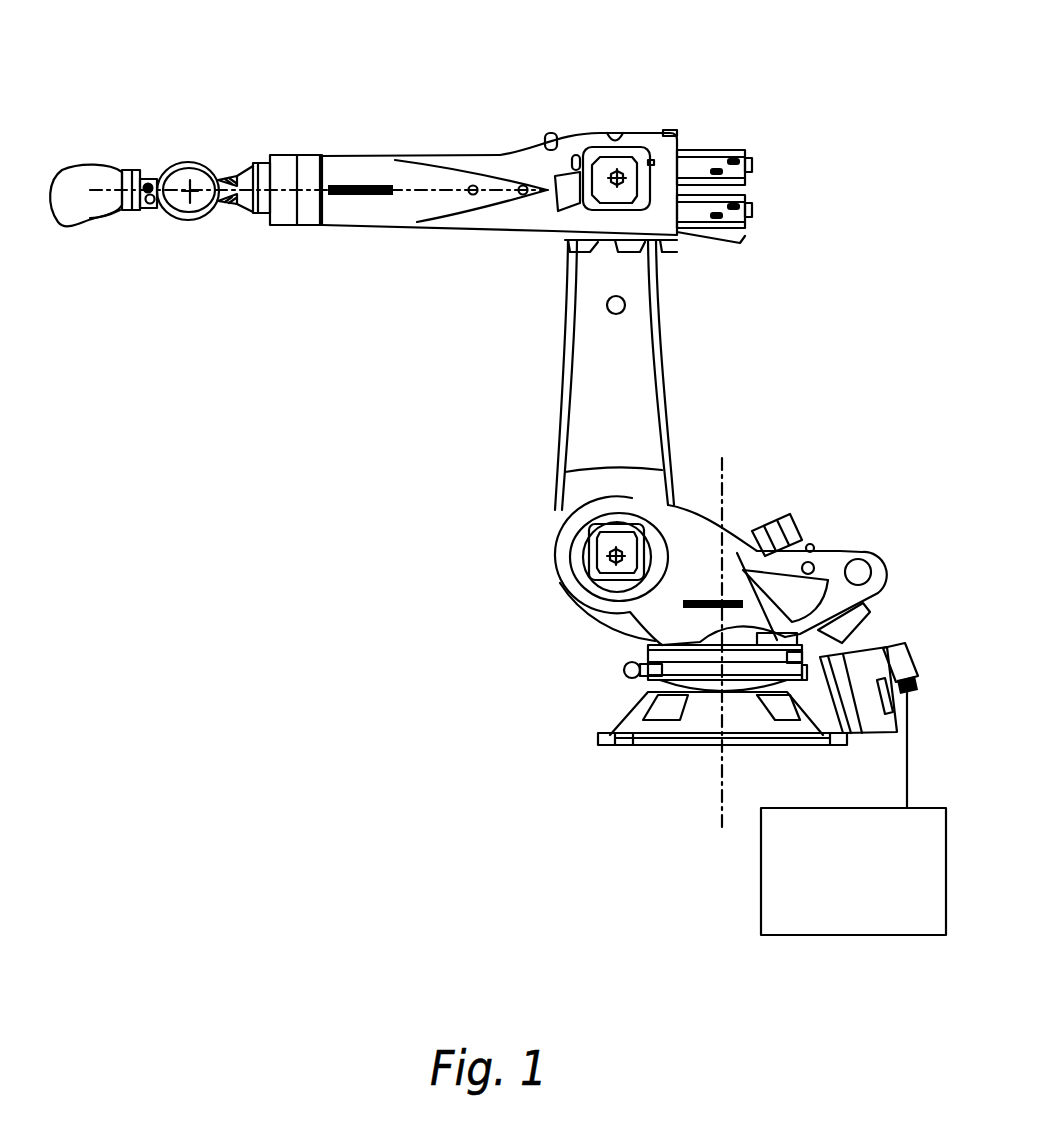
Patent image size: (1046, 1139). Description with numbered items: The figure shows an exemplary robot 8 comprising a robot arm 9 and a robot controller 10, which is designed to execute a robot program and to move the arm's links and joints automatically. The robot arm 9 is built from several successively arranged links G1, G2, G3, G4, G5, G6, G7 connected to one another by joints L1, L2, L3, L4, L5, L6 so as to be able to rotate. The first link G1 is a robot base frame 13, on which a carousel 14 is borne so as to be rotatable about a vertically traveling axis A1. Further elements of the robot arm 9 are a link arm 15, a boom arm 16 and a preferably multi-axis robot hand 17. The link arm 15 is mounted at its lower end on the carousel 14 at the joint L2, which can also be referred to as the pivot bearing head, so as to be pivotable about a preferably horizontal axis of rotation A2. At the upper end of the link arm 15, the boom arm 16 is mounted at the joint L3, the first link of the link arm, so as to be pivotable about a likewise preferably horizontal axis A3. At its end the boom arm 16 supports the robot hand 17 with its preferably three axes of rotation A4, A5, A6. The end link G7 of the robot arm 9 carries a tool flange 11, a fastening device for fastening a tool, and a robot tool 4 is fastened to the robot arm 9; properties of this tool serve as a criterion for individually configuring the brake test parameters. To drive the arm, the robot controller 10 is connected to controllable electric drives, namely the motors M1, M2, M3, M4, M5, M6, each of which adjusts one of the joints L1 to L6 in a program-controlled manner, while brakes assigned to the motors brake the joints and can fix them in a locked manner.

The robot 8 is at (828, 153).
The robot arm 9 is at (581, 375).
The robot tool 4 is at (82, 212).
The end link G7 is at (116, 157).
The tool flange 11 is at (123, 185).
The link G6 is at (152, 165).
The axis of rotation A5 is at (191, 180).
The axis of rotation A6 is at (109, 216).
The joint L6 is at (130, 212).
The joint L5 is at (193, 220).
The link G5 is at (298, 128).
The robot hand 17 is at (244, 163).
The joint L4 is at (270, 226).
The link G4 is at (437, 148).
The boom arm 16 is at (355, 168).
The axis of rotation A4 is at (552, 133).
The first link of the link arm L3 is at (630, 214).
The electric motor M3 is at (615, 182).
The axis A3 is at (619, 180).
The electric motor M5 is at (743, 150).
The electric motor M6 is at (713, 150).
The electric motor M4 is at (740, 243).
The link G3 is at (551, 375).
The link arm 15 is at (599, 400).
The pivot bearing head L2 is at (567, 524).
The electric motor M2 is at (612, 557).
The axis of rotation A2 is at (620, 554).
The link G2 is at (796, 545).
The carousel 14 is at (752, 530).
The electric motor M1 is at (800, 548).
The joint L1 is at (650, 648).
The link G1 is at (678, 758).
The robot base frame 13 is at (648, 730).
The axis A1 is at (722, 790).
The robot controller 10 is at (788, 895).